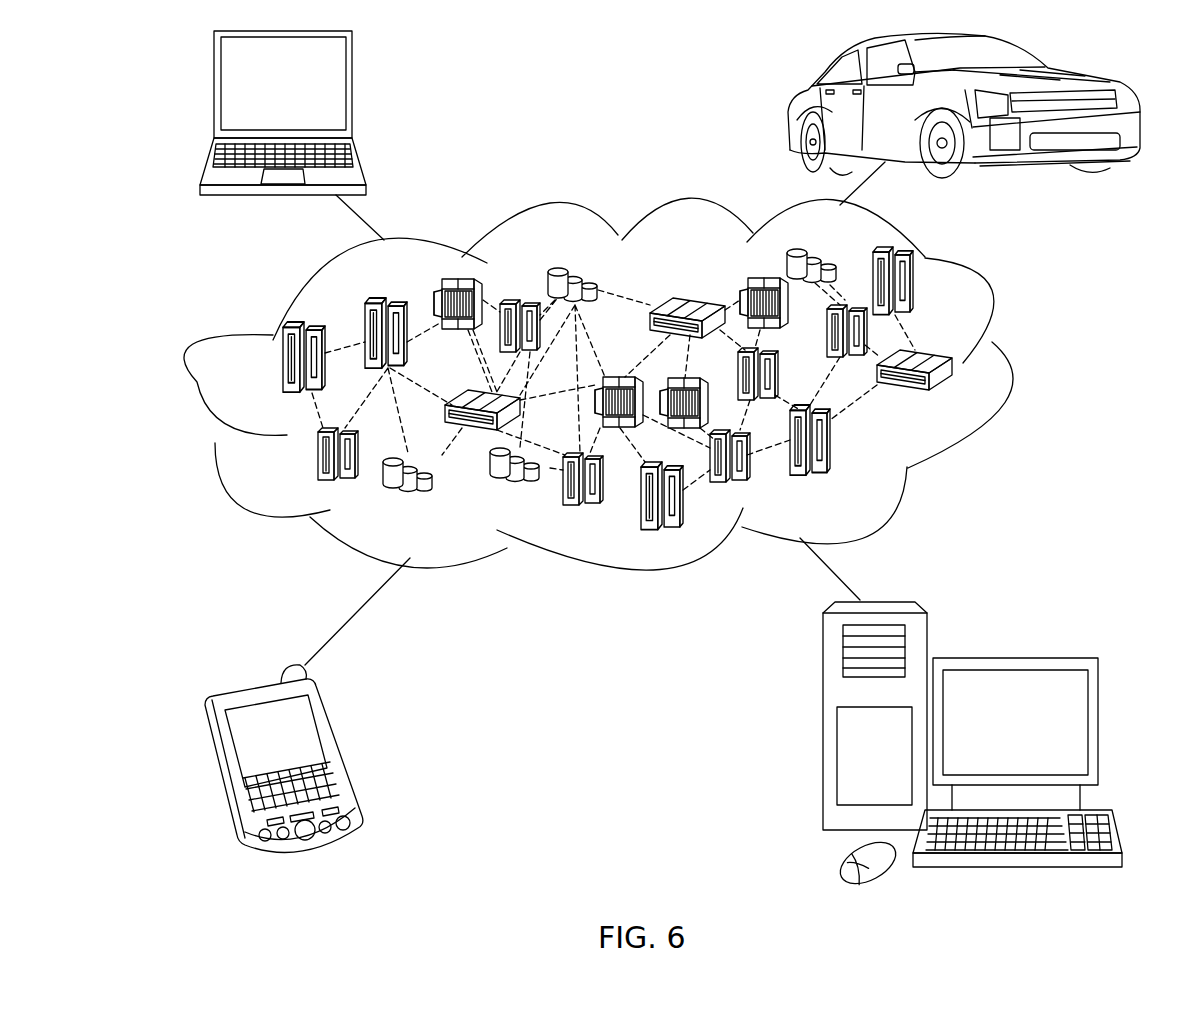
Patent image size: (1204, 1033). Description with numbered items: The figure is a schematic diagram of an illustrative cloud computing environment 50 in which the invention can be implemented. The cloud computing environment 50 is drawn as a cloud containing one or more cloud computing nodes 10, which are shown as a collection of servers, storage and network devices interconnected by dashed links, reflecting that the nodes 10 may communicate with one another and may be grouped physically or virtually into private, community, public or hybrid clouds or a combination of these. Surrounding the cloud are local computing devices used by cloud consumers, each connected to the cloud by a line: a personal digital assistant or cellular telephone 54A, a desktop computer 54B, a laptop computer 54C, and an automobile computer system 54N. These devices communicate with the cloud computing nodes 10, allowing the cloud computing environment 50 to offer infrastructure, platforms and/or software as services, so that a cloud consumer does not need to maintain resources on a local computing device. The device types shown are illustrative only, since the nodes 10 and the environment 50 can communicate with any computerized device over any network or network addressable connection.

The cloud computing environment 50 is at (1013, 367).
The cloud computing node 10 is at (960, 402).
The personal digital assistant or cellular telephone 54A is at (340, 752).
The desktop computer 54B is at (1010, 658).
The laptop computer 54C is at (352, 92).
The automobile computer system 54N is at (794, 108).